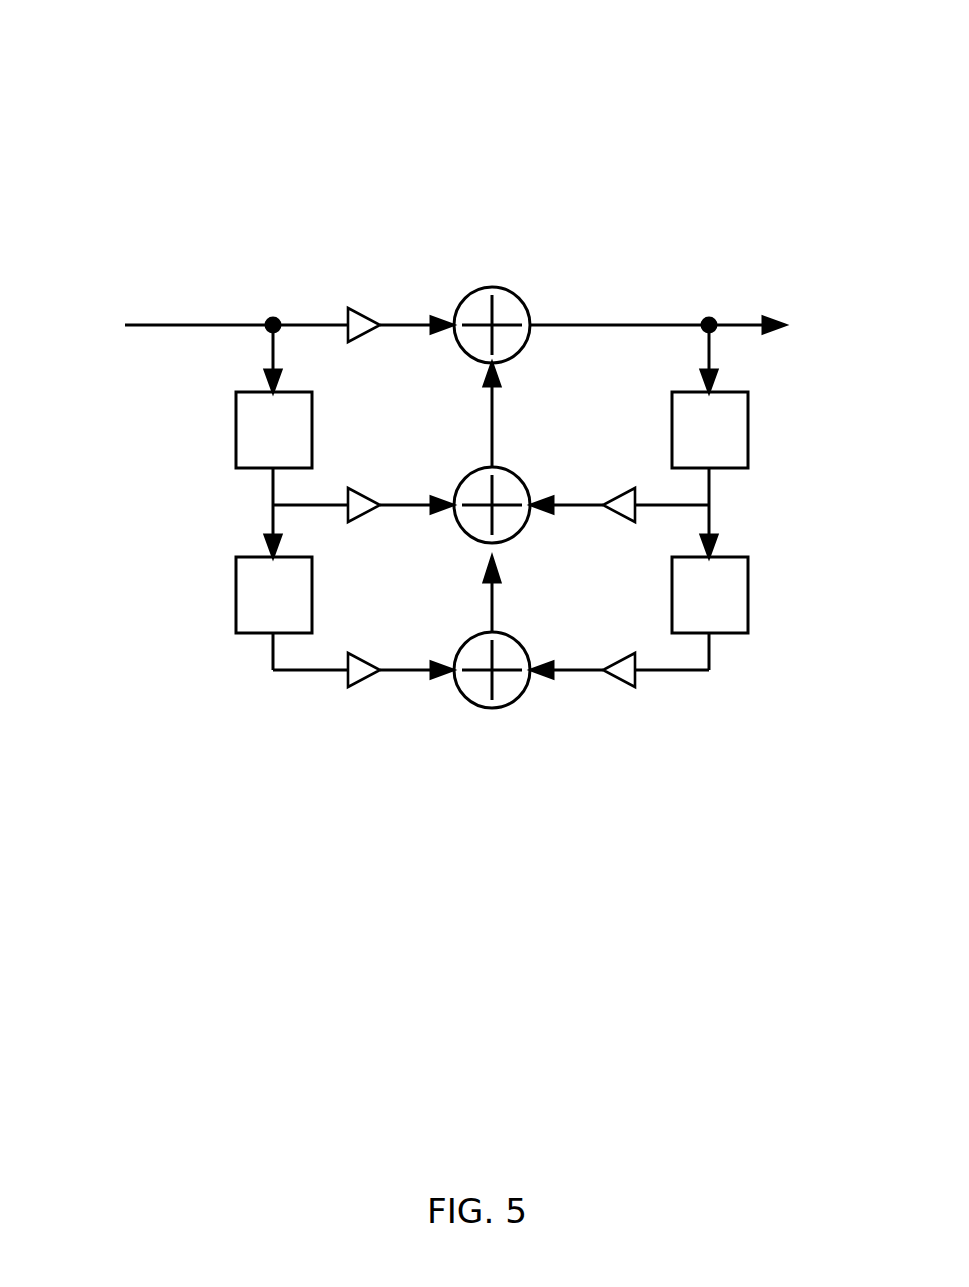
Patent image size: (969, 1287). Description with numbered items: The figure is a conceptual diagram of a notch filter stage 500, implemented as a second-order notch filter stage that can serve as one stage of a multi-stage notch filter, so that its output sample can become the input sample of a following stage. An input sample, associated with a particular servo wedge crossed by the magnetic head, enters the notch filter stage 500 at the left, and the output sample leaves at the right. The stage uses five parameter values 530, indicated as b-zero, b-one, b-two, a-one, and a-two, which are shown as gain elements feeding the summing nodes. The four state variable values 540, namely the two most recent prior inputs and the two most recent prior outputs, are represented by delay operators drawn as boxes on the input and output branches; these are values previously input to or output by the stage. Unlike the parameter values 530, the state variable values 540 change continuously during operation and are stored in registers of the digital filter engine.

The notch filter stage 500 is at (134, 62).
The parameter values 530 is at (376, 259).
The state variable values 540 is at (219, 381).